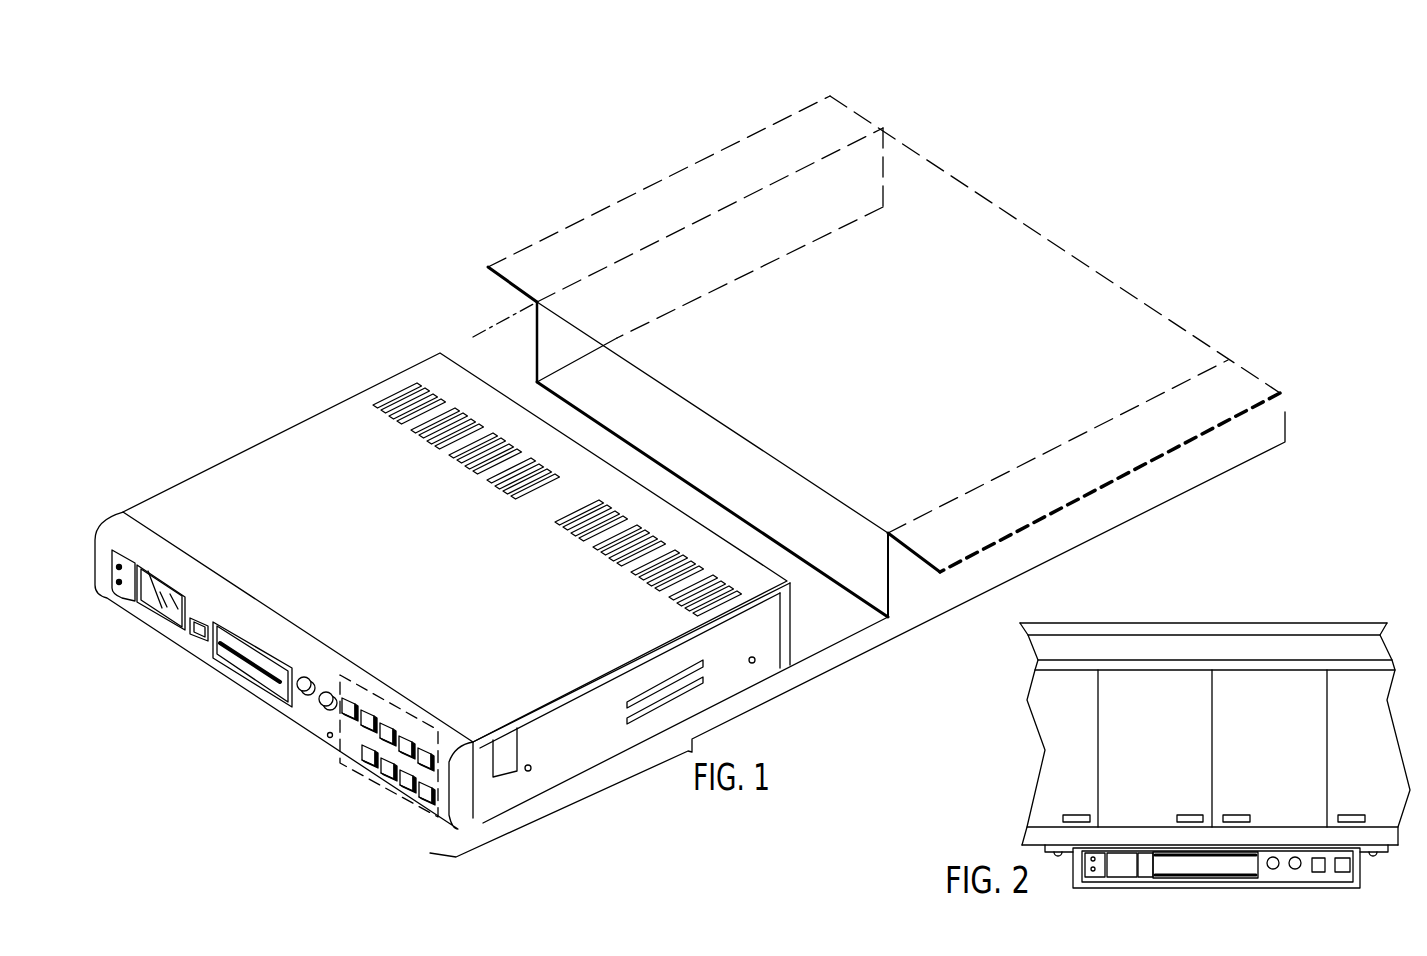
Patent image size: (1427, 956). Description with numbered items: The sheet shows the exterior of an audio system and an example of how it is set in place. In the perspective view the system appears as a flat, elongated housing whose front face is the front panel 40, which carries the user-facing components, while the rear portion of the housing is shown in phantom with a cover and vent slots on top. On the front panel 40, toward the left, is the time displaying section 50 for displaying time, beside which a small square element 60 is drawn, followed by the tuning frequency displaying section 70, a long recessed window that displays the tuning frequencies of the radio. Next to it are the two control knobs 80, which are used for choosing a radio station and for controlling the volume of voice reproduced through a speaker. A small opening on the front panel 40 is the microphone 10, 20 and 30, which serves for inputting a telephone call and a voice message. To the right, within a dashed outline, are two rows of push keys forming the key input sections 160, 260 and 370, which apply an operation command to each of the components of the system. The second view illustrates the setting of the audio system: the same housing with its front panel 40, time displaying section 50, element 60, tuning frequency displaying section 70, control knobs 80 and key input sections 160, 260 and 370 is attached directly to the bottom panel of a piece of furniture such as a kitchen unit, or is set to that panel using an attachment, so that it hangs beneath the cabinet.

The microphone 10 is at (293, 760).
The microphone 20 is at (293, 760).
The microphone 30 is at (326, 737).
The front panel 40 is at (212, 679).
The time displaying section 50 is at (155, 609).
The button 60 is at (191, 630).
The tuning frequency displaying section 70 is at (268, 684).
The control knobs 80 is at (327, 709).
The key input section 160 is at (369, 765).
The key input section 260 is at (369, 765).
The key input section 370 is at (381, 792).